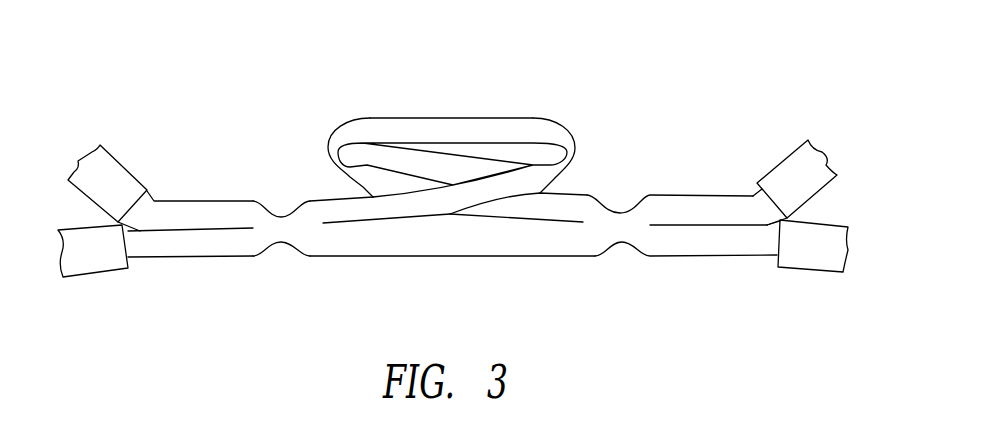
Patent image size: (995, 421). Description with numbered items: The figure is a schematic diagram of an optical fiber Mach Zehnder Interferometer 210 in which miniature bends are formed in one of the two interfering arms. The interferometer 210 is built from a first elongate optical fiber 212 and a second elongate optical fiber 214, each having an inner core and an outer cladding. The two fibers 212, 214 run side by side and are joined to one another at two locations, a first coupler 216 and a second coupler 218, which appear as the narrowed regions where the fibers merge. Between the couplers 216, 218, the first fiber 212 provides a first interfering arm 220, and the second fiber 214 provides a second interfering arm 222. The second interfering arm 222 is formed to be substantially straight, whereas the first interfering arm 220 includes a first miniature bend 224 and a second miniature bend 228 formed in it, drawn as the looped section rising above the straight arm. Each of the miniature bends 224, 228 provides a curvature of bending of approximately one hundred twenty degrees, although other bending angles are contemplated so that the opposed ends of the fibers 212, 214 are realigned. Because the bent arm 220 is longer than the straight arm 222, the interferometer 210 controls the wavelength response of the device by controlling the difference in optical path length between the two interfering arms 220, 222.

The optical fiber Mach Zehnder Interferometer 210 is at (496, 46).
The first elongate optical fiber 212 is at (178, 201).
The second elongate optical fiber 214 is at (193, 244).
The coupler 216 is at (281, 255).
The coupler 218 is at (620, 255).
The first interfering arm 220 is at (487, 137).
The second interfering arm 222 is at (443, 245).
The first miniature bend 224 is at (577, 141).
The second miniature bend 228 is at (331, 147).